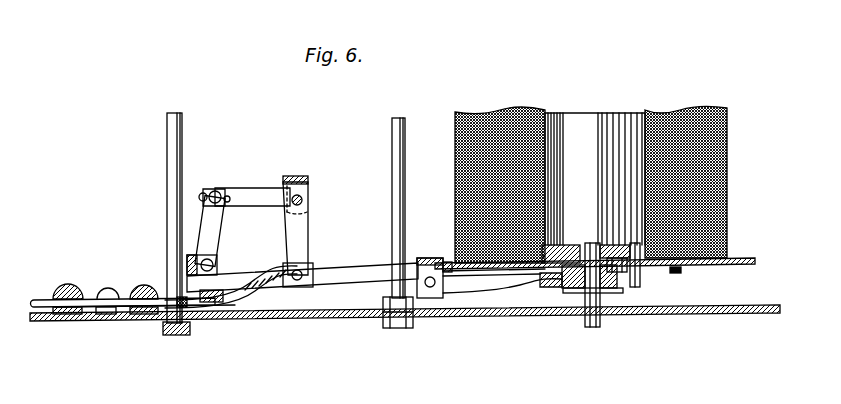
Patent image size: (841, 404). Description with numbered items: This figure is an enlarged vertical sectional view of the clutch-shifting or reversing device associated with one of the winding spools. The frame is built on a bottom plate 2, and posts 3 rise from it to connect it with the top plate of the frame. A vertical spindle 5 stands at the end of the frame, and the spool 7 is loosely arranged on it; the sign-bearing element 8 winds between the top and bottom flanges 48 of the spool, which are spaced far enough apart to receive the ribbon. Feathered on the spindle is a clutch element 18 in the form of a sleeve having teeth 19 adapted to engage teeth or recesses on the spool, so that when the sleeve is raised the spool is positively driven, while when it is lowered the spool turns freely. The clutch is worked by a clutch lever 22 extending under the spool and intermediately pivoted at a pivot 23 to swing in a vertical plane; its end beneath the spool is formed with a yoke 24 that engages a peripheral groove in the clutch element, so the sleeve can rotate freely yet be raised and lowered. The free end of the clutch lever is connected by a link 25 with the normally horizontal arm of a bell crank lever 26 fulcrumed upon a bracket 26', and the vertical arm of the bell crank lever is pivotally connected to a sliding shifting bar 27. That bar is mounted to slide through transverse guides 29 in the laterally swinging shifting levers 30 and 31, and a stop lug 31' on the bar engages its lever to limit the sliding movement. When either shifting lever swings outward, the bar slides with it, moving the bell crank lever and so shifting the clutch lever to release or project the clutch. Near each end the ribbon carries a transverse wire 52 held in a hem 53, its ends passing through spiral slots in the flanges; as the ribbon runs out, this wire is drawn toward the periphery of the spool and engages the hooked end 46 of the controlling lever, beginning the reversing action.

The bottom plate 2 is at (458, 318).
The posts 3 is at (170, 220).
The vertical spindle 5 is at (593, 325).
The spool 7 is at (585, 117).
The sign-bearing element 8 is at (727, 167).
The clutch element 18 is at (620, 293).
The teeth 19 is at (552, 286).
The clutch lever 22 is at (353, 279).
The pivot 23 is at (430, 277).
The yoke 24 is at (560, 288).
The link 25 is at (218, 228).
The bell crank lever 26 is at (315, 234).
The bracket 26' is at (319, 173).
The sliding shifting bar 27 is at (273, 289).
The transverse guides 29 is at (137, 290).
The shifting lever 30 is at (70, 322).
The shifting lever 31 is at (123, 329).
The stop lug 31' is at (126, 326).
The hooked end 46 is at (682, 272).
The flanges 48 is at (755, 263).
The transverse wires 52 is at (642, 287).
The hems 53 is at (653, 264).